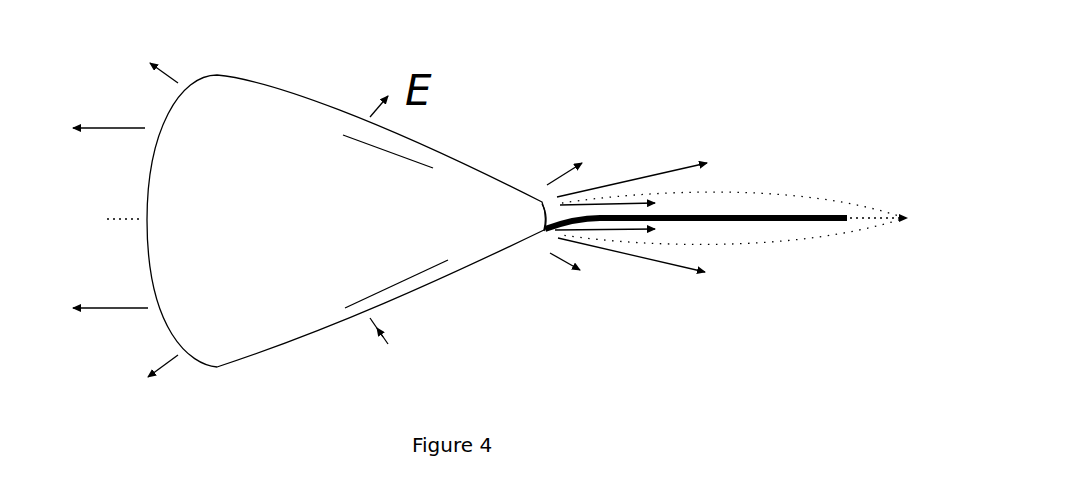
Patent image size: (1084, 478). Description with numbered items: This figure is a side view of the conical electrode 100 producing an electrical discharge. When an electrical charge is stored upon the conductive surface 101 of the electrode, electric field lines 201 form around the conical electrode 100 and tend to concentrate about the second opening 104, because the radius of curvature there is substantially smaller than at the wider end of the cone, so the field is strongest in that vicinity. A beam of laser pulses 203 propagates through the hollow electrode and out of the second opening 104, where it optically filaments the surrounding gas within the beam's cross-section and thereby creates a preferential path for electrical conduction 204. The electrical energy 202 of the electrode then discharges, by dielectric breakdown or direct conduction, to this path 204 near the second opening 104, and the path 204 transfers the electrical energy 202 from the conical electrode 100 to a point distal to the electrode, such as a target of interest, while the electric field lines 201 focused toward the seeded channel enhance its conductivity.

The conical electrode 100 is at (577, 87).
The conductive surface 101 is at (268, 175).
The second opening 104 is at (542, 233).
The electric field lines 201 is at (383, 337).
The electrical energy 202 is at (730, 221).
The beam of laser pulses 203 is at (865, 221).
The preferential path for electrical conduction 204 is at (788, 192).